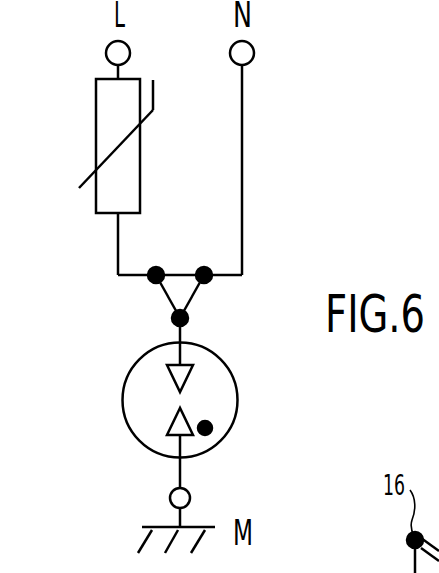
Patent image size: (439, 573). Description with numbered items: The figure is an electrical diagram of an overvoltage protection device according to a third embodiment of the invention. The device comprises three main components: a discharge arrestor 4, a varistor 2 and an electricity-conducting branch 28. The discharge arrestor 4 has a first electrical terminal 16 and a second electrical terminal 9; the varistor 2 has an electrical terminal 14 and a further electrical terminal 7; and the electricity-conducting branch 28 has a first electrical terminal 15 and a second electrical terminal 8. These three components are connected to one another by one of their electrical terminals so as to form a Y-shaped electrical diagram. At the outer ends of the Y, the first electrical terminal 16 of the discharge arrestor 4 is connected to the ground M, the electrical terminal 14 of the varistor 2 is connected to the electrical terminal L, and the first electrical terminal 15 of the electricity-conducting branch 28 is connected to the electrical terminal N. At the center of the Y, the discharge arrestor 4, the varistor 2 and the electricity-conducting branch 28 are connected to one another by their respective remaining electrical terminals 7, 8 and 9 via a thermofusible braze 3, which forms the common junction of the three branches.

The varistor 2 is at (96, 125).
The thermofusible braze 3 is at (193, 297).
The discharge arrestor 4 is at (238, 398).
The first electrical terminal of the varistor 7 is at (150, 282).
The second electrical terminal of the electricity-conducting branch 8 is at (211, 280).
The second electrical terminal of the discharge arrestor 9 is at (173, 320).
The electrical terminal of the varistor 14 is at (106, 53).
The first electrical terminal of the electricity-conducting branch 15 is at (255, 53).
The first electrical terminal of the discharge arrestor 16 is at (170, 498).
The electricity-conducting branch 28 is at (243, 168).